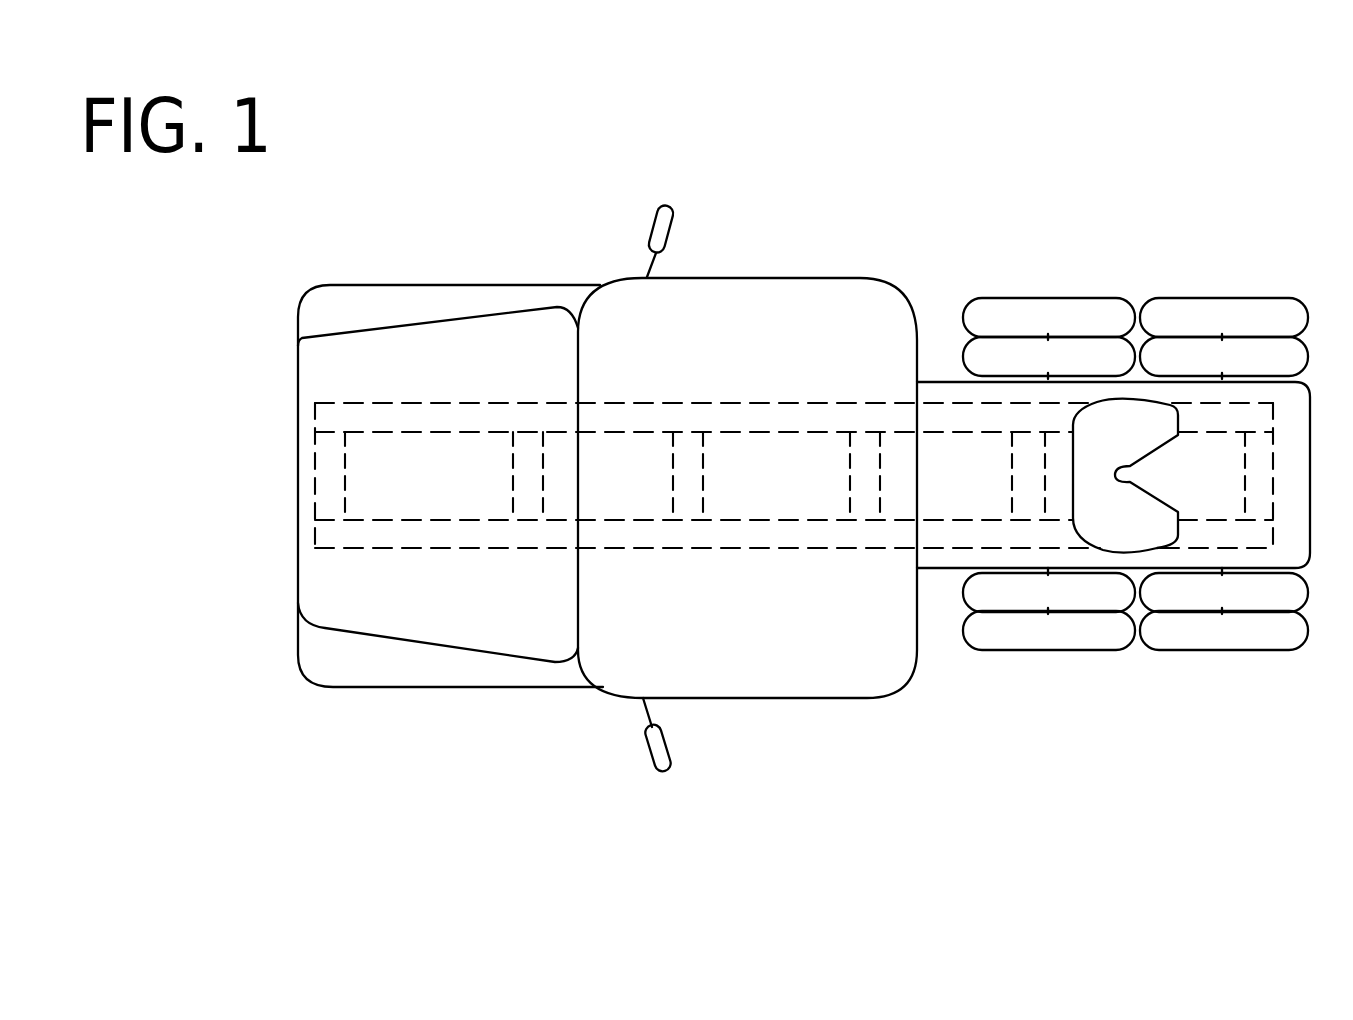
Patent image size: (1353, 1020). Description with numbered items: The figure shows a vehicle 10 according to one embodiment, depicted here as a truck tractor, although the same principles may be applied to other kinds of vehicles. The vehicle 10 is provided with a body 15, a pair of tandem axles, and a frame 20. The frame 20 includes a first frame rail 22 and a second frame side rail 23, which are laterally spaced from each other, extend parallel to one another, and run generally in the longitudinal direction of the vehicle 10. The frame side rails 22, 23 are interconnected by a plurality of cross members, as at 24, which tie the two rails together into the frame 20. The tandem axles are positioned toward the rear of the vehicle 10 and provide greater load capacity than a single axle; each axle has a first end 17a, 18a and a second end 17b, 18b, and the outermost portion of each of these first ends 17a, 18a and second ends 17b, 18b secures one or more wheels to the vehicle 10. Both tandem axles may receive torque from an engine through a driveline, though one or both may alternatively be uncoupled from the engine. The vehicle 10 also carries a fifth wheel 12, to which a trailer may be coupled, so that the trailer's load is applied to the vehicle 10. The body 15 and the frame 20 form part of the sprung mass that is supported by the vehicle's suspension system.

The vehicle 10 is at (292, 277).
The fifth wheel 12 is at (1130, 540).
The body 15 is at (813, 700).
The first end of tandem axle 17a is at (1047, 650).
The second end of tandem axle 17b is at (1048, 300).
The first end of tandem axle 18a is at (1222, 650).
The second end of tandem axle 18b is at (1222, 300).
The frame 20 is at (306, 392).
The first frame rail 22 is at (407, 552).
The second frame side rail 23 is at (403, 403).
The cross members 24 is at (317, 478).